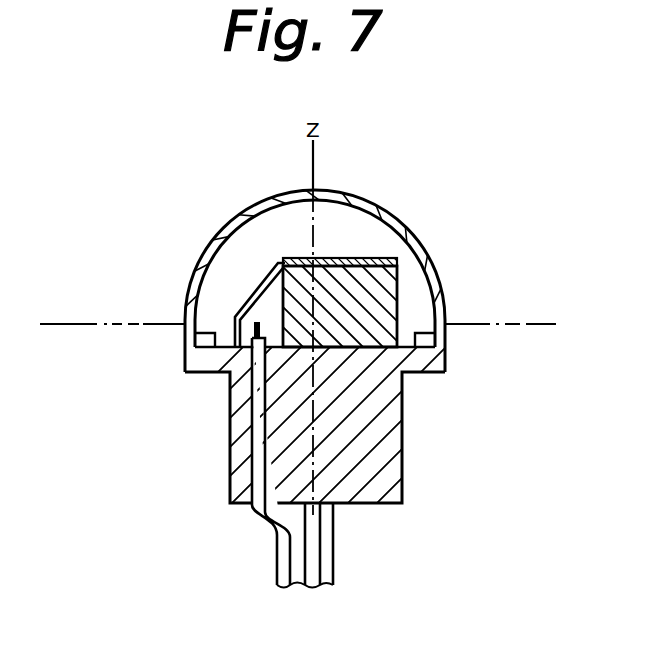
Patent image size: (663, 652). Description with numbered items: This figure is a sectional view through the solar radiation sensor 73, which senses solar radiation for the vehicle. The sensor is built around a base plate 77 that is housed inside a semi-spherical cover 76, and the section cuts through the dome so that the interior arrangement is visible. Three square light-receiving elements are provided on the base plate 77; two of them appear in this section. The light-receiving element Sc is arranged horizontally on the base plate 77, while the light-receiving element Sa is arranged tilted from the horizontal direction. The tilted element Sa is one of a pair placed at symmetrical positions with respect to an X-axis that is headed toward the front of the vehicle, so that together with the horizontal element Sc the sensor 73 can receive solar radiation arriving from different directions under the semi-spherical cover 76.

The solar radiation sensor 73 is at (426, 201).
The semi-spherical cover 76 is at (343, 198).
The base plate 77 is at (372, 315).
The light-receiving element Sa is at (252, 293).
The light-receiving element Sc is at (362, 257).